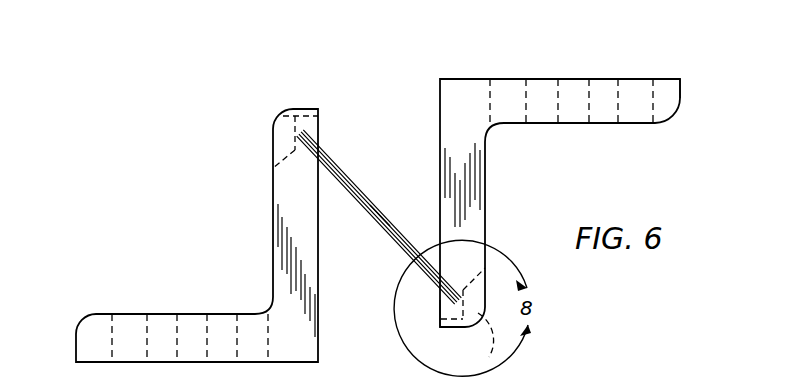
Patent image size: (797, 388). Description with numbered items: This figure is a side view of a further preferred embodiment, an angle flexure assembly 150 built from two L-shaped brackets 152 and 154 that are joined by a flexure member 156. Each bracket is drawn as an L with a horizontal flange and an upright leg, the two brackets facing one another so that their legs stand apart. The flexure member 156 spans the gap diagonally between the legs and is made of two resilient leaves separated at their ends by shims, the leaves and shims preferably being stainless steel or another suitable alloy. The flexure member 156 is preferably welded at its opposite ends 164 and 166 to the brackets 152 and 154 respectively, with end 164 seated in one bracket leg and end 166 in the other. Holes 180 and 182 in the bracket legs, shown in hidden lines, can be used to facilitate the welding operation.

The angle flexure assembly 150 is at (458, 78).
The L-shaped bracket 152 is at (90, 331).
The L-shaped bracket 154 is at (675, 98).
The flexure member 156 is at (379, 209).
The end of flexure member 164 is at (323, 140).
The end of flexure member 166 is at (442, 295).
The hole 180 is at (270, 130).
The hole 182 is at (467, 317).